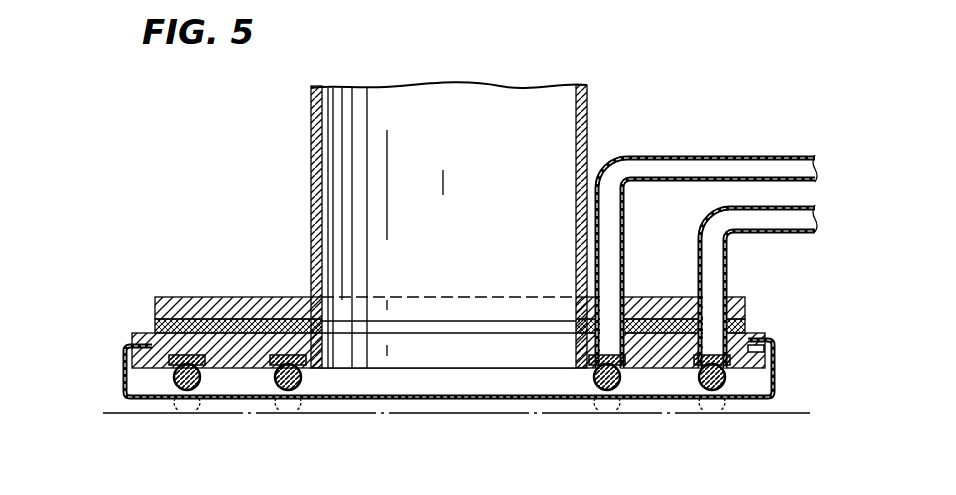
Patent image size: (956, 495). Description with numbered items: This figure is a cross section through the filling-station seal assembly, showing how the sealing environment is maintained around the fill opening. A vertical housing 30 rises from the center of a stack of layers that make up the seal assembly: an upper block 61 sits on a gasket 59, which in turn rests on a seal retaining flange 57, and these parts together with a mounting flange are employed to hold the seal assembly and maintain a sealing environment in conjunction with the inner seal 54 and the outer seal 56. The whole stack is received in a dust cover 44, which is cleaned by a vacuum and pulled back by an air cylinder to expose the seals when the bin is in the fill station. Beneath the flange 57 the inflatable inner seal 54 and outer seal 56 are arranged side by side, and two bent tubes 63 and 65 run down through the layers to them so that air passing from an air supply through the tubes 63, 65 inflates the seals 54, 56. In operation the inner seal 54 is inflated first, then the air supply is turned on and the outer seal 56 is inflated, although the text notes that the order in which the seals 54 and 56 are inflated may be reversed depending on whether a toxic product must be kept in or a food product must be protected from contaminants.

The cylindrical housing 30 is at (589, 118).
The dust cover 44 is at (125, 382).
The inner seal 54 is at (290, 397).
The outer seal 56 is at (190, 397).
The seal retaining flange 57 is at (768, 342).
The gasket 59 is at (742, 330).
The top layer 61 is at (732, 300).
The tube 63 is at (733, 170).
The tube 65 is at (795, 222).